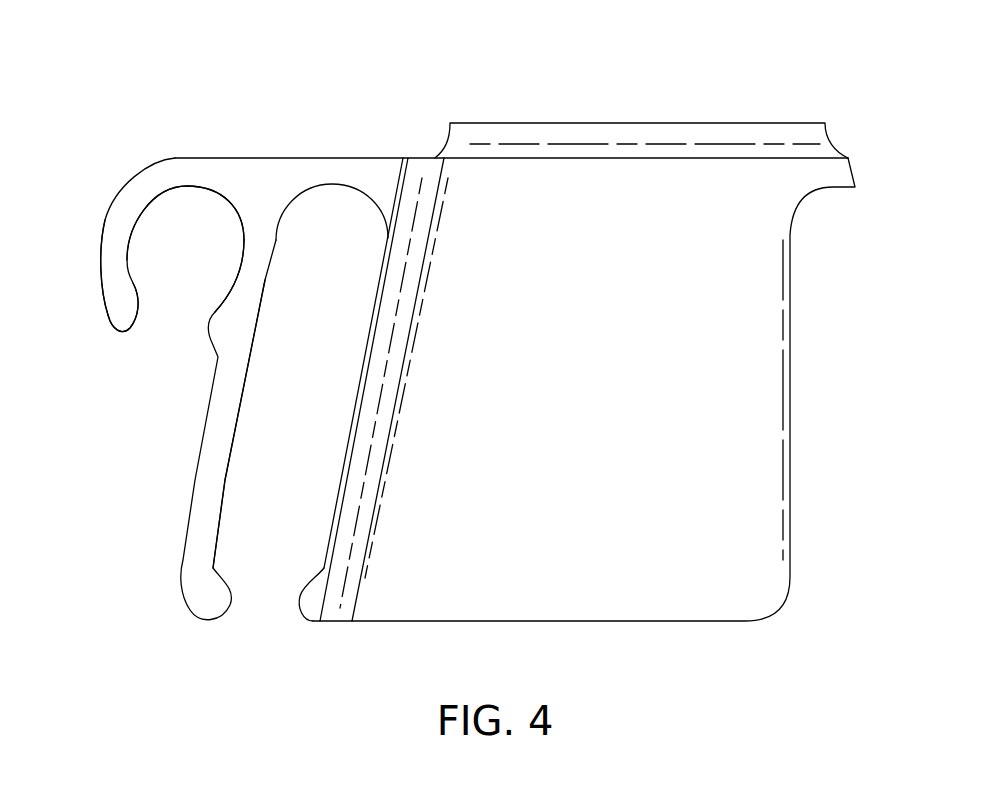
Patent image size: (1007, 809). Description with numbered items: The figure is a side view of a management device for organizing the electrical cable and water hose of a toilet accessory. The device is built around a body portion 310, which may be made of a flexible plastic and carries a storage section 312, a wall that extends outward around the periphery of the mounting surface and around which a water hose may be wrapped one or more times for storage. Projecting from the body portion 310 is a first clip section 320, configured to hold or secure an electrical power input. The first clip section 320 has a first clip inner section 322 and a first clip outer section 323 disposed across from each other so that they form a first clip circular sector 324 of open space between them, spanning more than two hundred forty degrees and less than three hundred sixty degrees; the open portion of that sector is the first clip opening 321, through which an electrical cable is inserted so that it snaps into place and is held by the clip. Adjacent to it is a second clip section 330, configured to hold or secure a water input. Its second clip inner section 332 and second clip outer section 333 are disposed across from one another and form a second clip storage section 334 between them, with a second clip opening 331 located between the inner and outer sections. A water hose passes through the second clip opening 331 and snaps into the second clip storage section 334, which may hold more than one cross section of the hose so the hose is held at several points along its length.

The body portion 310 is at (640, 67).
The storage section 312 is at (490, 375).
The first clip section 320 is at (182, 176).
The first clip opening 321 is at (167, 326).
The first clip inner section 322 is at (220, 300).
The first clip outer section 323 is at (129, 264).
The first clip circular sector 324 is at (172, 221).
The second clip section 330 is at (322, 174).
The second clip opening 331 is at (272, 626).
The second clip inner section 332 is at (312, 584).
The second clip outer section 333 is at (221, 510).
The second clip storage section 334 is at (340, 206).